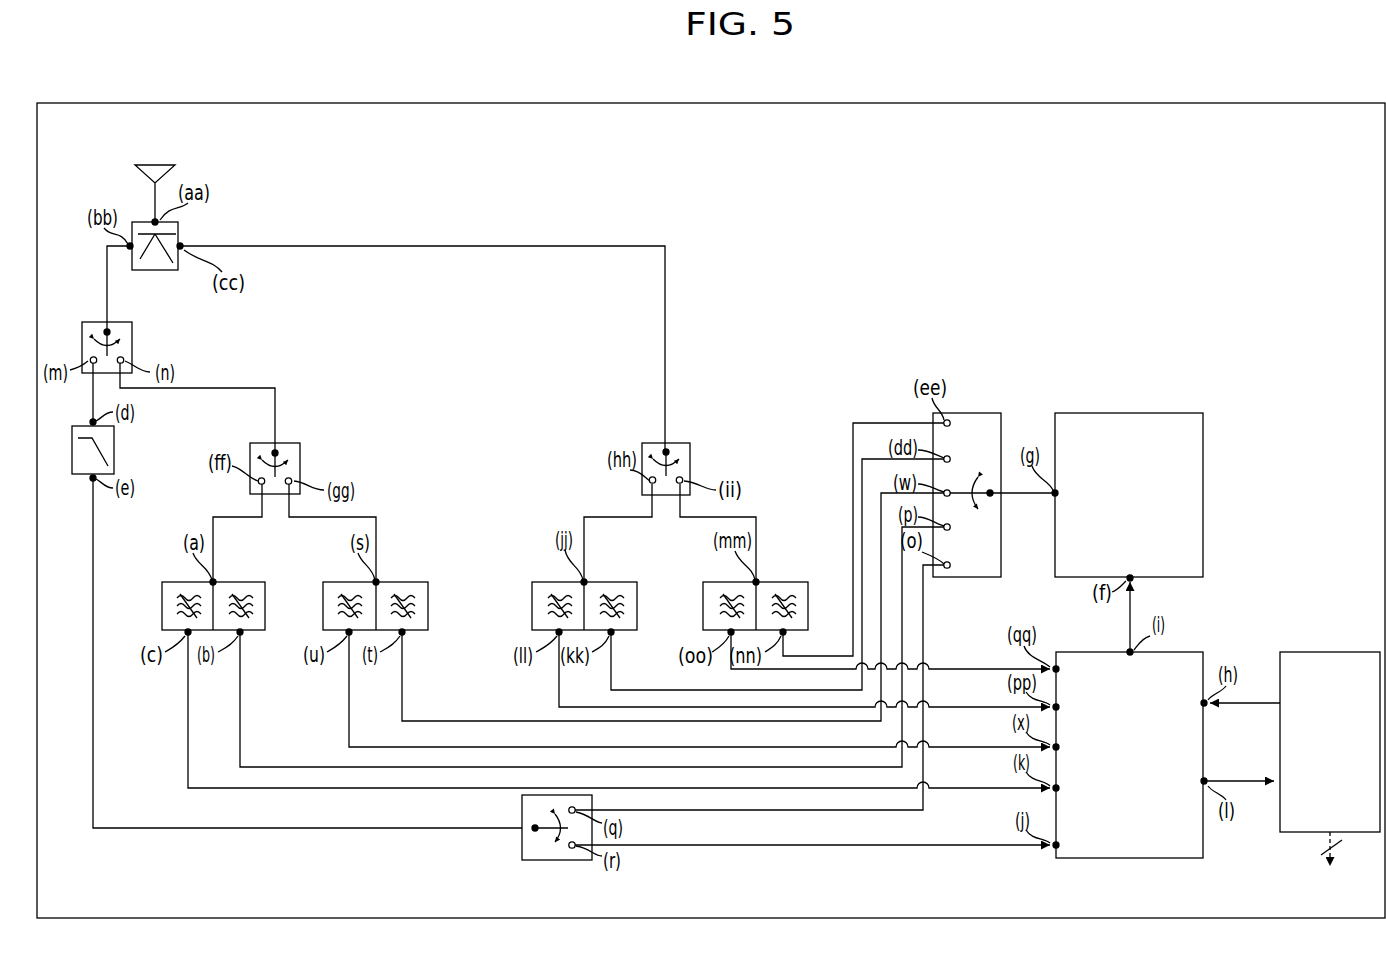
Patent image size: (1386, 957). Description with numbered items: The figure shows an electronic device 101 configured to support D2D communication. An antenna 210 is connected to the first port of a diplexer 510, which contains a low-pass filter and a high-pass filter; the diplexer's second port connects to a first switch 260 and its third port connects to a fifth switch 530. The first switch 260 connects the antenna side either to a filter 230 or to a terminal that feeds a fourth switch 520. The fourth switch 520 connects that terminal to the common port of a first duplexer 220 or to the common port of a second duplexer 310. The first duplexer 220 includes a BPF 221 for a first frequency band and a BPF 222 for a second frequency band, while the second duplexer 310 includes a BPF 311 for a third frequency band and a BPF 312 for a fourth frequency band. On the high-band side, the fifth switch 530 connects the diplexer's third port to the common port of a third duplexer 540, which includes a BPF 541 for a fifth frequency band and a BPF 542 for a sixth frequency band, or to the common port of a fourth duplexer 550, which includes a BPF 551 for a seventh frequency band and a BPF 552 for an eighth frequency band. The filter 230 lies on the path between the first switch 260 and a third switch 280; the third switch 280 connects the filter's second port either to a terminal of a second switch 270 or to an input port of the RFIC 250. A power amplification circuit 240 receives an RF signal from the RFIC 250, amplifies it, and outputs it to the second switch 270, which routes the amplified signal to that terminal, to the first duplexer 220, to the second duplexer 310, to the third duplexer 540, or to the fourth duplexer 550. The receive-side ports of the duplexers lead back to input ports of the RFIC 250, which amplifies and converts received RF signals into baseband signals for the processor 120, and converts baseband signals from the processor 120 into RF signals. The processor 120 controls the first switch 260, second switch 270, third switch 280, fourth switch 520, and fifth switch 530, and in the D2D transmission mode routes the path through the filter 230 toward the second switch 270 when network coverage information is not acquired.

The electronic device 101 is at (710, 103).
The antenna 210 is at (175, 166).
The diplexer 510 is at (180, 226).
The first switch 260 is at (140, 330).
The filter 230 is at (137, 460).
The fourth switch 520 is at (299, 415).
The fifth switch 530 is at (685, 427).
The first duplexer 220 is at (152, 572).
The BPF 221 is at (232, 580).
The BPF 222 is at (193, 580).
The second duplexer 310 is at (440, 572).
The BPF 311 is at (394, 580).
The BPF 312 is at (333, 580).
The third duplexer 540 is at (555, 571).
The BPF 541 is at (620, 580).
The BPF 542 is at (532, 606).
The fourth duplexer 550 is at (786, 572).
The BPF 551 is at (830, 590).
The BPF 552 is at (713, 580).
The third switch 280 is at (505, 852).
The second switch 270 is at (987, 370).
The power amplification circuit 240 is at (1130, 412).
The RFIC 250 is at (1186, 651).
The processor 120 is at (1324, 651).